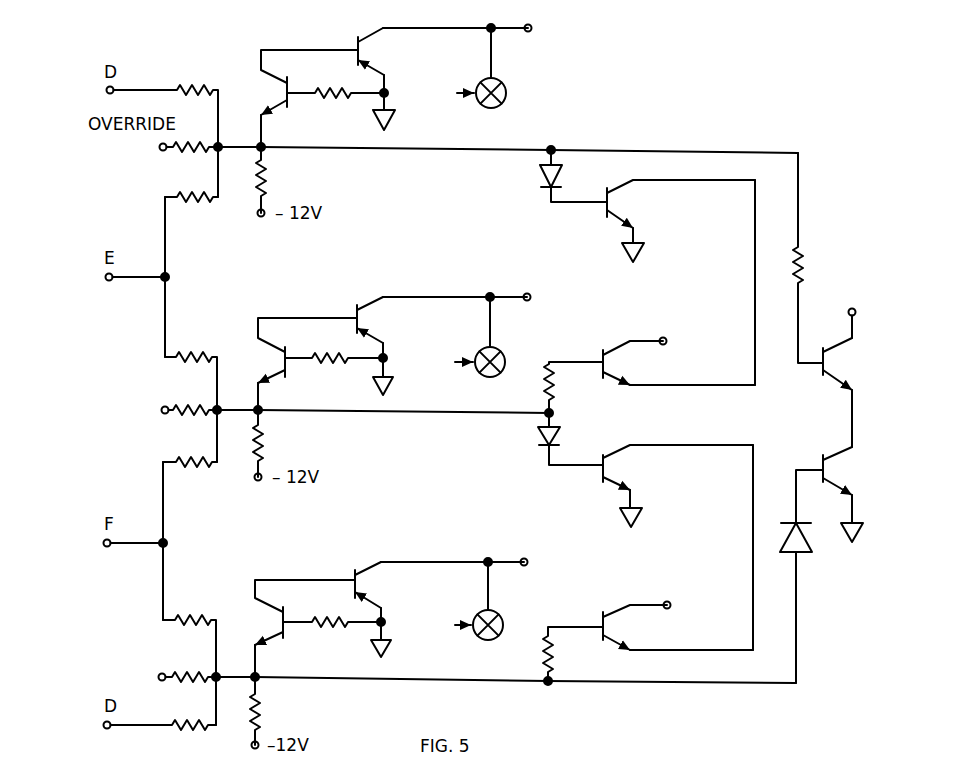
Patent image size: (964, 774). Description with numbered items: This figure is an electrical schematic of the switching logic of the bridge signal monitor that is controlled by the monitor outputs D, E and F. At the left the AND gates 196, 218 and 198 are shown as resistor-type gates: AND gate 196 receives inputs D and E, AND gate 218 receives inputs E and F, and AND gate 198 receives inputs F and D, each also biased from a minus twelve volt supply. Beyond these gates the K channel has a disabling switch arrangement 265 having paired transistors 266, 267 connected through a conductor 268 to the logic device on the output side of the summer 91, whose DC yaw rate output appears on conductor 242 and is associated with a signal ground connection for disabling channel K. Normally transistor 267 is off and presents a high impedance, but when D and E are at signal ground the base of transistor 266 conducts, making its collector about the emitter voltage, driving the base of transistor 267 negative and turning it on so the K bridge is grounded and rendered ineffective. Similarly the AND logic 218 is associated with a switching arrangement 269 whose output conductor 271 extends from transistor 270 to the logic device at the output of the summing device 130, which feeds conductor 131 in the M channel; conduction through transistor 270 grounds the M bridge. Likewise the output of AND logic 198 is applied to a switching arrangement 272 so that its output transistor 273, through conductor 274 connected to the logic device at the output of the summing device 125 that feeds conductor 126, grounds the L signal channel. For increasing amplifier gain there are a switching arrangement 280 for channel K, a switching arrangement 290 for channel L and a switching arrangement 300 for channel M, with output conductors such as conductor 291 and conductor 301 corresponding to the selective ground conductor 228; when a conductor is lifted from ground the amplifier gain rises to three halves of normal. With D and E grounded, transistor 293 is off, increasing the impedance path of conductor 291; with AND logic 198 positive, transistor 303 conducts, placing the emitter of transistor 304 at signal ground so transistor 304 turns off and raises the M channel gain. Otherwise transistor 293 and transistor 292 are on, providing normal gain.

The AND gate 196 is at (219, 146).
The AND gate 218 is at (219, 409).
The AND gate 198 is at (218, 676).
The disabling switch arrangement 265 is at (335, 74).
The transistor 266 is at (283, 96).
The transistor 267 is at (381, 60).
The conductor 268 is at (458, 29).
The output conductor 242 is at (490, 62).
The summer 91 is at (500, 88).
The switching arrangement 269 is at (330, 342).
The transistor 270 is at (362, 318).
The output conductor 271 is at (458, 298).
The conductor 131 is at (485, 334).
The summing device 130 is at (493, 349).
The switching arrangement 272 is at (328, 602).
The output transistor 273 is at (362, 586).
The conductor 274 is at (461, 563).
The conductor 126 is at (490, 584).
The summing device 125 is at (491, 616).
The transistor 293 is at (606, 192).
The switching arrangement 290 is at (645, 420).
The transistor 292 is at (600, 371).
The output conductor 291 is at (664, 345).
The switching arrangement 280 is at (695, 567).
The selective ground conductor 228 is at (668, 609).
The switching arrangement 300 is at (838, 332).
The output conductor 301 is at (855, 310).
The transistor 304 is at (830, 365).
The transistor 303 is at (830, 474).